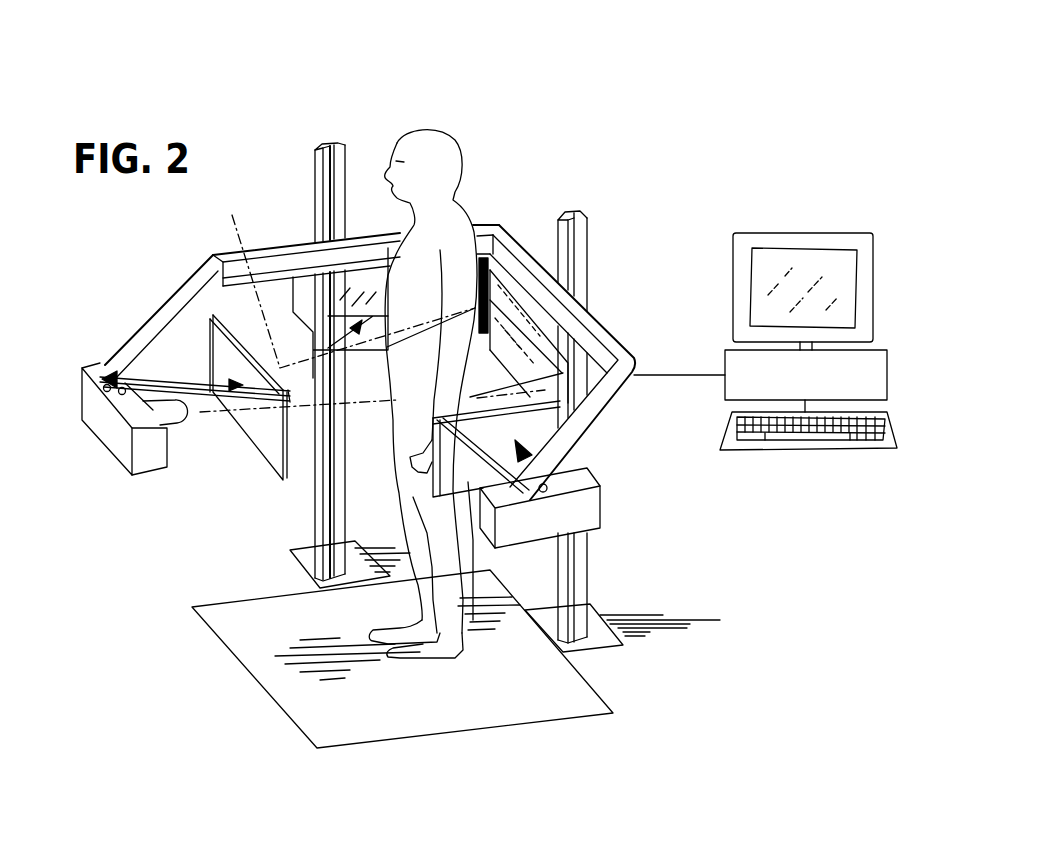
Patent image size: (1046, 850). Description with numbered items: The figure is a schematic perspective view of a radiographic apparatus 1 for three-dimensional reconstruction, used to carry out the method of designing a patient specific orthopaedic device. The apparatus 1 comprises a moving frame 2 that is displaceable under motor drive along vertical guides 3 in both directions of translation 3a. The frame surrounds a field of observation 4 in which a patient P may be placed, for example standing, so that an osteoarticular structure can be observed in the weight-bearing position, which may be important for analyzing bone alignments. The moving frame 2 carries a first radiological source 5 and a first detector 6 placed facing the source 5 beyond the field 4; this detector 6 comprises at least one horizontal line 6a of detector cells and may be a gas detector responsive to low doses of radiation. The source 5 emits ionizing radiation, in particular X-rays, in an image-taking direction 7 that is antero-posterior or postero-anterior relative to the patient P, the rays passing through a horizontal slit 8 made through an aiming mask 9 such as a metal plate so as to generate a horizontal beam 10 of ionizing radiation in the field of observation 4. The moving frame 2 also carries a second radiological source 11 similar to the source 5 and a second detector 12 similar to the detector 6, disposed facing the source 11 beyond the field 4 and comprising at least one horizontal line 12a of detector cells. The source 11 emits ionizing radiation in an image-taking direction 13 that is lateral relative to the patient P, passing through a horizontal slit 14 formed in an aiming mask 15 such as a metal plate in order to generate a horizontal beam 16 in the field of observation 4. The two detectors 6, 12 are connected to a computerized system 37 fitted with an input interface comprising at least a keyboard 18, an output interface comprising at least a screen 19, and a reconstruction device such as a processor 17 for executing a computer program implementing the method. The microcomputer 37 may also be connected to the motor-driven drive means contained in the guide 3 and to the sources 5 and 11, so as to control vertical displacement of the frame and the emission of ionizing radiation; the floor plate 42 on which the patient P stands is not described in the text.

The radiographic apparatus 1 is at (626, 218).
The moving frame 2 is at (568, 337).
The vertical guides 3 is at (321, 160).
The directions of translation 3a is at (50, 325).
The field of observation 4 is at (470, 202).
The first radiological source 5 is at (153, 463).
The first detector 6 is at (595, 371).
The horizontal line of detector cells 6a is at (548, 400).
The image-taking direction 7 is at (183, 403).
The horizontal slit 8 is at (255, 415).
The aiming mask 9 is at (277, 455).
The horizontal beam of ionizing radiation 10 is at (372, 302).
The second radiological source 11 is at (587, 512).
The second detector 12 is at (437, 400).
The horizontal line of detector cells 12a is at (357, 322).
The image-taking direction 13 is at (500, 447).
The horizontal slit 14 is at (592, 435).
The aiming mask 15 is at (457, 483).
The horizontal beam of ionizing radiation 16 is at (500, 363).
The processor 17 is at (865, 378).
The keyboard 18 is at (837, 443).
The screen 19 is at (776, 238).
The computerized system 37 is at (876, 226).
The floor plate 42 is at (232, 630).
The patient P is at (453, 247).